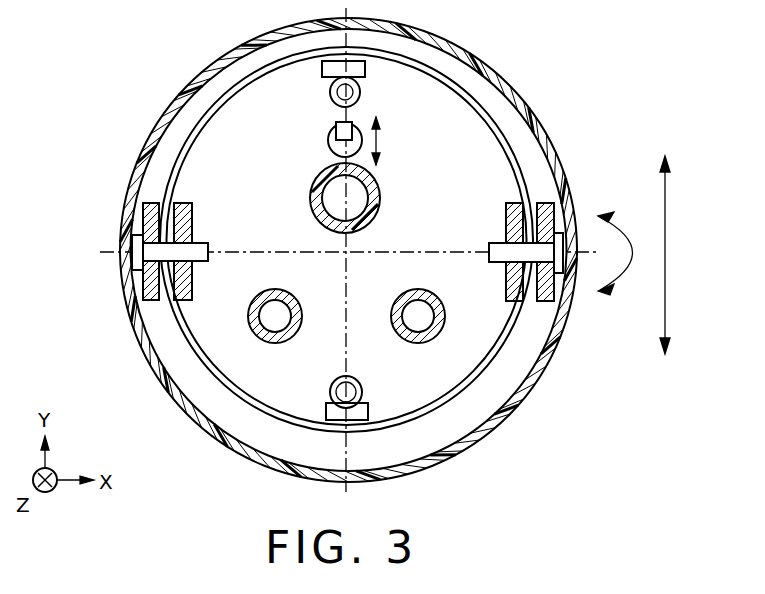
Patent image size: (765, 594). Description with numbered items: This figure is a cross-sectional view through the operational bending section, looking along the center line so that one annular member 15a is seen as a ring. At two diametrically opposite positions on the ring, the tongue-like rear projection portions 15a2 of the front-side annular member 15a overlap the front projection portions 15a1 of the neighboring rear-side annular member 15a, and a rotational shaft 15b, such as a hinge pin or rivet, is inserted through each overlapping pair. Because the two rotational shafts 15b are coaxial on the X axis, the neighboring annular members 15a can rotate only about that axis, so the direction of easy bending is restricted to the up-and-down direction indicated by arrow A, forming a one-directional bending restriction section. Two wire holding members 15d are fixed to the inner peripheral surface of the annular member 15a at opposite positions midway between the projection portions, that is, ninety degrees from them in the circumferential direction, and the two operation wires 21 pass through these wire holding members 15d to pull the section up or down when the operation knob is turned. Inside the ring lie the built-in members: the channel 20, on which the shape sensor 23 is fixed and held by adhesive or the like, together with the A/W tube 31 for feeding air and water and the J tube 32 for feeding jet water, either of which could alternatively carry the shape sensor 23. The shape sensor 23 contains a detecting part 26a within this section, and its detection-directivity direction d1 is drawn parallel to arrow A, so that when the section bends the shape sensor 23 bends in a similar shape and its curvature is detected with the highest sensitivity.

The annular member 15a is at (477, 115).
The front projection portion 15a1 is at (143, 206).
The rear projection portion 15a2 is at (192, 215).
The rotational shaft 15b is at (203, 261).
The wire holding member 15d is at (361, 94).
The channel 20 is at (312, 192).
The operation wire 21 is at (330, 88).
The shape sensor 23 is at (328, 142).
The detecting part 26a is at (334, 128).
The A/W tube 31 is at (270, 343).
The J tube 32 is at (422, 343).
The detection-directivity direction d1 is at (382, 140).
The arrow indicating direction of easy bending A is at (642, 255).